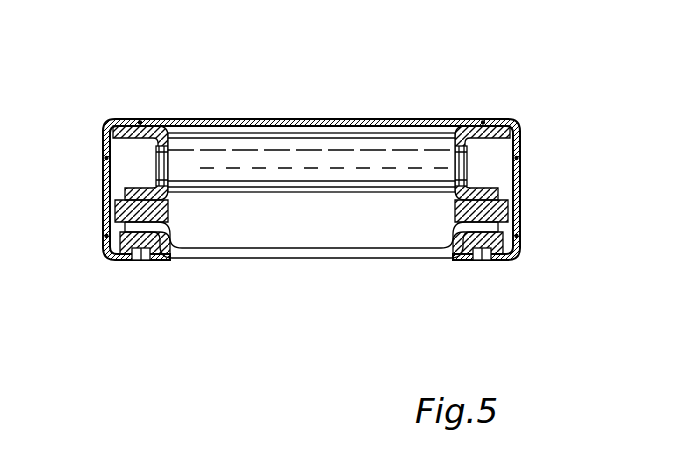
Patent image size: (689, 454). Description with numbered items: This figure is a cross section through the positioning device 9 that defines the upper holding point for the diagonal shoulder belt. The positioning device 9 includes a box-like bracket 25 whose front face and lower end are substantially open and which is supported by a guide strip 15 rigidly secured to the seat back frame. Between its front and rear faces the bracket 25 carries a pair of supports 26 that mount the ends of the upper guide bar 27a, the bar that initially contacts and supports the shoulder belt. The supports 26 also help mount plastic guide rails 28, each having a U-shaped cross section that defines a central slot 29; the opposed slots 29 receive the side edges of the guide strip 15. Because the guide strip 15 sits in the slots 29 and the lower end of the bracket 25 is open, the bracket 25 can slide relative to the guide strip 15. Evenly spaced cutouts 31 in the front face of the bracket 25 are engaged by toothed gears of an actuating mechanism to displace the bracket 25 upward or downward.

The positioning device 9 is at (311, 178).
The box-like bracket 25 is at (229, 120).
The supports 26 is at (152, 120).
The upper guide bar 27a is at (386, 150).
The guide rails 28 is at (118, 248).
The central slot 29 is at (170, 221).
The guide strip 15 is at (236, 250).
The cutouts 31 is at (138, 259).